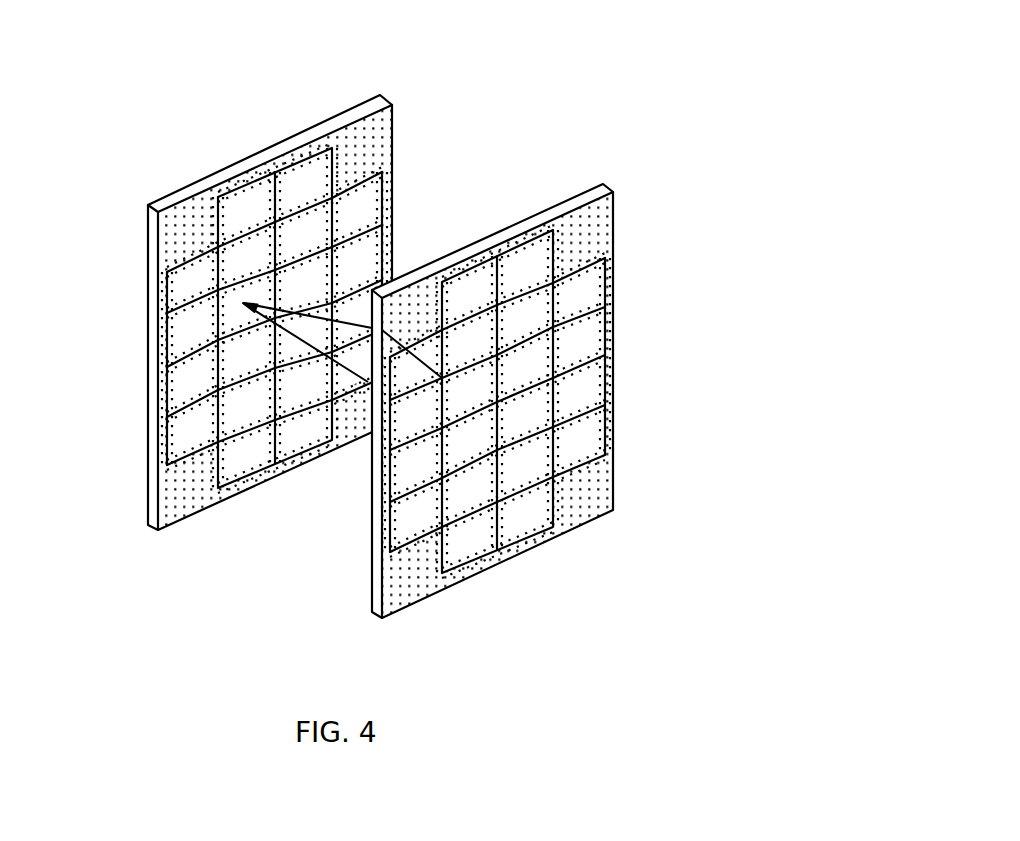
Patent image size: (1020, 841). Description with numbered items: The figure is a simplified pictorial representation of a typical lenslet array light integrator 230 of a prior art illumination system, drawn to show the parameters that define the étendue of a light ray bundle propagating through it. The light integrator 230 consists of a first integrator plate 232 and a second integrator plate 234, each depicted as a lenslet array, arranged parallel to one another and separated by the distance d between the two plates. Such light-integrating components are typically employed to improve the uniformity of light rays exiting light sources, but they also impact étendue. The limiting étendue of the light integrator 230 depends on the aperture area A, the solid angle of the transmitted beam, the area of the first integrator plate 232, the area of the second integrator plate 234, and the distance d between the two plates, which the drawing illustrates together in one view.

The lenslet array light integrator 230 is at (375, 353).
The first integrator plate 232 is at (377, 121).
The second integrator plate 234 is at (601, 219).
The aperture area A is at (330, 150).
The distance between the two plates d is at (358, 612).